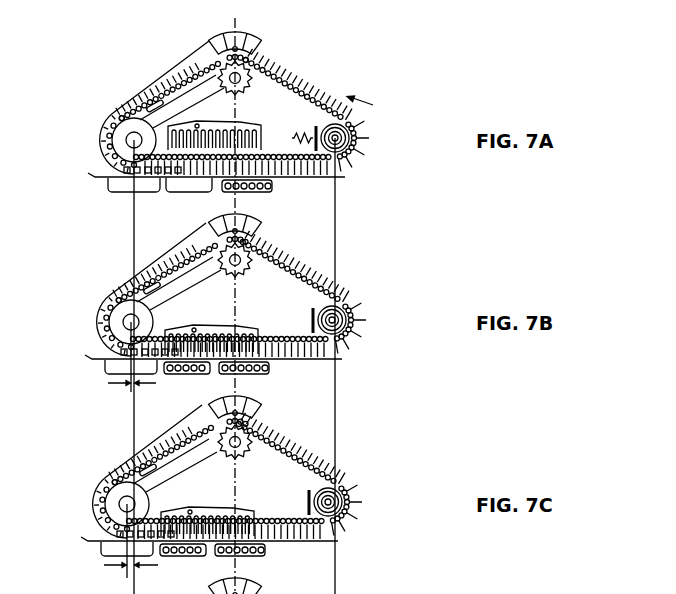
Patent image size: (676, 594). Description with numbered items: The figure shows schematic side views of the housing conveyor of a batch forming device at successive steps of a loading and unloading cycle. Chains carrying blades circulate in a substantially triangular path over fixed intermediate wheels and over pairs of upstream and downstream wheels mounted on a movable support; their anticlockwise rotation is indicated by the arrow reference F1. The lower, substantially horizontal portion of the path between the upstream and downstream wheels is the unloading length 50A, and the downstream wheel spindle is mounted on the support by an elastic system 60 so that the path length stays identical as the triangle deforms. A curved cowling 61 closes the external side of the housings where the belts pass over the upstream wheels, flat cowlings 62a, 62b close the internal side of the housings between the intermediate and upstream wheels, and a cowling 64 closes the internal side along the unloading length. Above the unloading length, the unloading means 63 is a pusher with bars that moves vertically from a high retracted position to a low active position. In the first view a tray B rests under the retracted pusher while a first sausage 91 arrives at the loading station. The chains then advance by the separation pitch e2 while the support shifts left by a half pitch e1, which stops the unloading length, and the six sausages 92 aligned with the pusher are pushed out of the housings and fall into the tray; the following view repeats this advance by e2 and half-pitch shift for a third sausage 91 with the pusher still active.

In FIG. 7A, the unloading length 50A is at (308, 160).
In FIG. 7A, the elastic system 60 is at (305, 130).
In FIG. 7A, the curved cowling 61 is at (100, 133).
In FIG. 7A, the flat cowling 62a is at (133, 112).
In FIG. 7A, the flat cowling 62b is at (188, 92).
In FIG. 7A, the unloading means 63 is at (250, 127).
In FIG. 7B, the unloading means 63 is at (243, 326).
In FIG. 7A, the cowling 64 is at (100, 172).
In FIG. 7A, the sausage 91 is at (238, 48).
In FIG. 7B, the sausage 91 is at (238, 232).
In FIG. 7C, the sausage 91 is at (238, 412).
In FIG. 7A, the six sausages 92 is at (165, 200).
In FIG. 7B, the six sausages 92 is at (163, 395).
In FIG. 7A, the tray B is at (108, 187).
In FIG. 7A, the arrow reference F1 is at (370, 101).
In FIG. 7B, the half-pitch translation distance e1 is at (123, 357).
In FIG. 7C, the separation pitch e2 is at (122, 541).